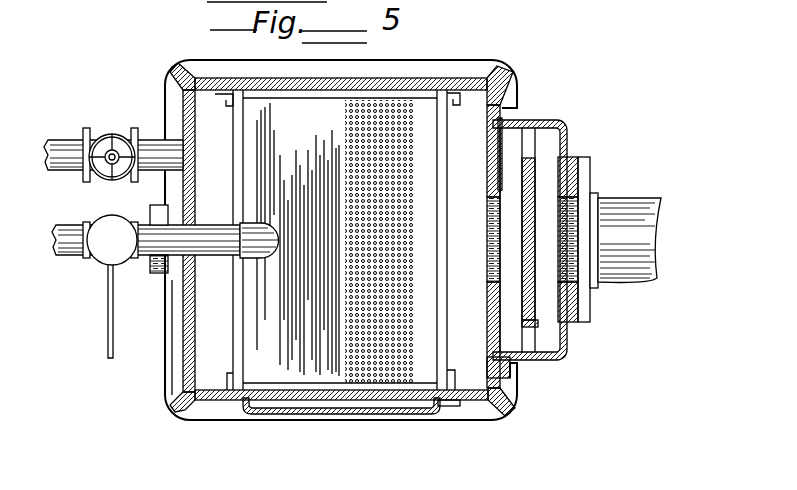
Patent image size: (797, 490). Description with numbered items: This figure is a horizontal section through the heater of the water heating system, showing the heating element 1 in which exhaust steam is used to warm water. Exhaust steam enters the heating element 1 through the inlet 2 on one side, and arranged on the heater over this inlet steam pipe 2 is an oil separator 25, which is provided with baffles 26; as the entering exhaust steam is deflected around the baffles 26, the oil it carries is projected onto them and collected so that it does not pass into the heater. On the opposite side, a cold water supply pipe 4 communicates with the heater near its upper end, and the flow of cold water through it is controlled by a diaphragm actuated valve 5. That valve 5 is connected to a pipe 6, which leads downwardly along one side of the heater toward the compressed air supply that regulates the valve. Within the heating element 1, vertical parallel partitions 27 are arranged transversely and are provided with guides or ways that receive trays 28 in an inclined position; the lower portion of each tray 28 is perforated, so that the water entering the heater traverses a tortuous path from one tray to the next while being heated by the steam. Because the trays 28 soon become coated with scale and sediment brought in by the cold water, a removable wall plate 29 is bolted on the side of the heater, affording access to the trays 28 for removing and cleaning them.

The heating element 1 is at (217, 400).
The inlet 2 is at (643, 237).
The cold water supply pipe 4 is at (222, 240).
The diaphragm actuated valve 5 is at (108, 255).
The pipe 6 is at (108, 335).
The oil separator 25 is at (542, 120).
The baffles 26 is at (527, 197).
The vertical parallel partitions 27 is at (240, 210).
The trays 28 is at (336, 241).
The removable wall plate 29 is at (367, 413).